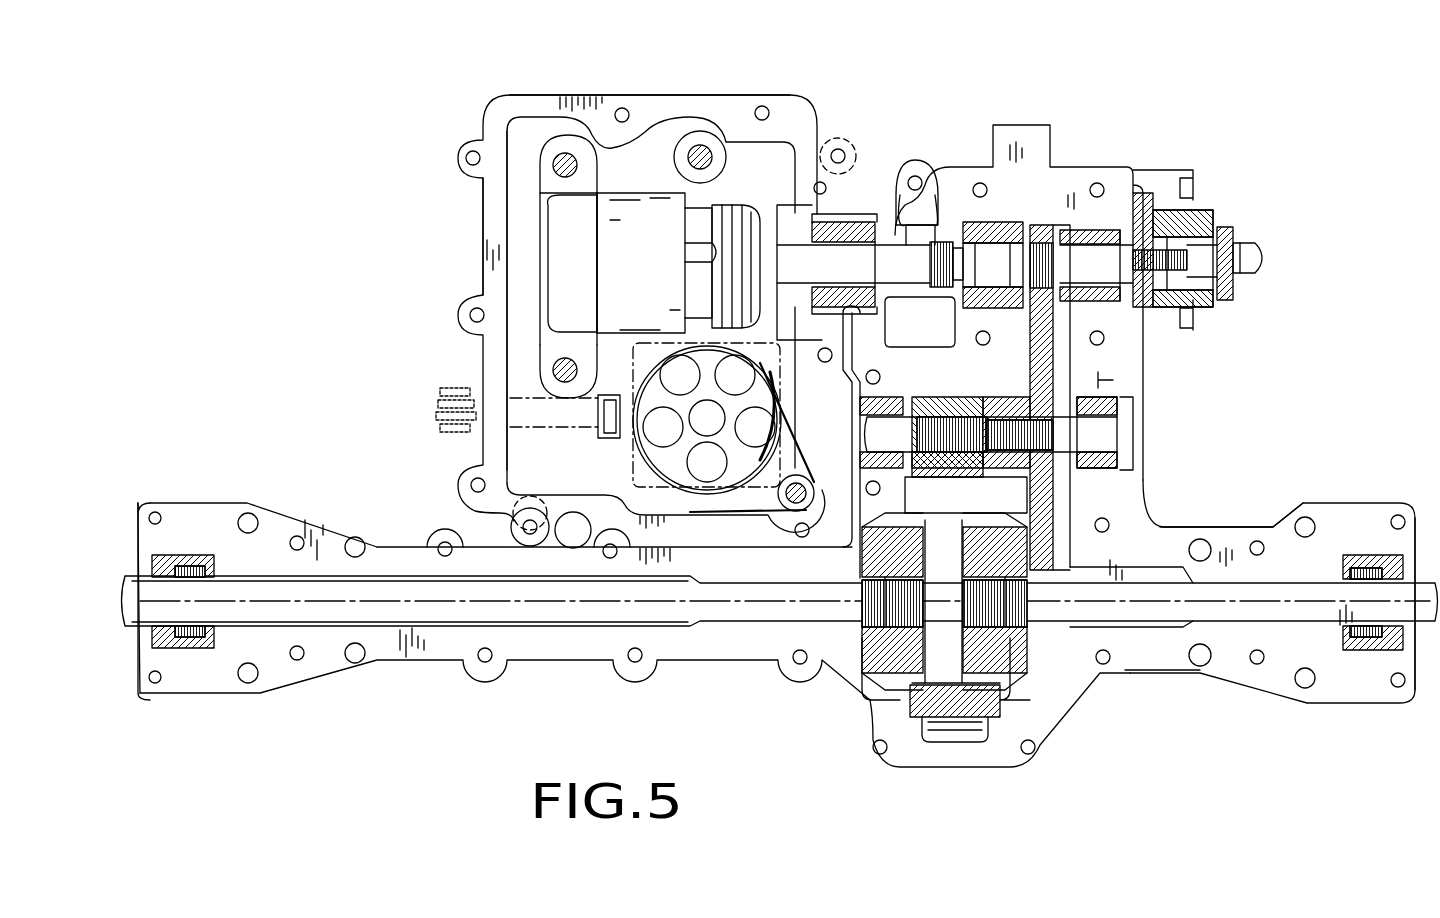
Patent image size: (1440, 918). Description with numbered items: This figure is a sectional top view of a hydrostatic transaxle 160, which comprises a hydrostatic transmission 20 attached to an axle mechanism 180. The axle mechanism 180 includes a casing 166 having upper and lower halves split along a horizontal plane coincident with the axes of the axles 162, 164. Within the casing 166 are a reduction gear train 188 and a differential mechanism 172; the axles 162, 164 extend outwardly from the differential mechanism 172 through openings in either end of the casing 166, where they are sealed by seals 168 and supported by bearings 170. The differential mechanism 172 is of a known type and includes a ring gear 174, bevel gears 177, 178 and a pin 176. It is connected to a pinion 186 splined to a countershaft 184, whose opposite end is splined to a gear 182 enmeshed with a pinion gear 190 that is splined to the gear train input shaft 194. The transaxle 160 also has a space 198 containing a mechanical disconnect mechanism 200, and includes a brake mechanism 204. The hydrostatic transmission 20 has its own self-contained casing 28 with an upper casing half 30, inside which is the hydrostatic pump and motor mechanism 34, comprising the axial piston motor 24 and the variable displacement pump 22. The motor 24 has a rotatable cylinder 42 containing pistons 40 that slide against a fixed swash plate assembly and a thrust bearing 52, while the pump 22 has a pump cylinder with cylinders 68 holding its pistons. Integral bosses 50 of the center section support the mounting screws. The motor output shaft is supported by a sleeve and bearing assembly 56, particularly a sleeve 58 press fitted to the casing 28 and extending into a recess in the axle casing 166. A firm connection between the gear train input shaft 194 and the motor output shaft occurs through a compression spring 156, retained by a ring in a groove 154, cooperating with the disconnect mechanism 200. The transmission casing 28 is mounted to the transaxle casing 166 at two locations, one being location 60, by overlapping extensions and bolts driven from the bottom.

The hydrostatic transmission 20 is at (486, 96).
The variable displacement pump 22 is at (688, 508).
The axial piston motor 24 is at (620, 277).
The casing 28 is at (628, 93).
The upper casing half 30 is at (487, 243).
The hydrostatic pump and motor mechanism 34 is at (628, 176).
The pistons 40 is at (712, 205).
The rotatable cylinder 42 is at (660, 178).
The integral bosses 50 is at (538, 165).
The thrust bearing 52 is at (703, 210).
The sleeve and bearing assembly 56 is at (812, 207).
The sleeve 58 is at (830, 226).
The mounting location 60 is at (839, 148).
The cylinders 68 is at (652, 432).
The groove 154 is at (880, 264).
The compression spring 156 is at (893, 225).
The transaxle 160 is at (415, 690).
The axle 162 is at (138, 660).
The axle 164 is at (1420, 668).
The casing 166 is at (1133, 443).
The seals 168 is at (173, 557).
The bearings 170 is at (205, 560).
The differential mechanism 172 is at (893, 690).
The ring gear 174 is at (948, 735).
The pin 176 is at (985, 700).
The bevel gear 177 is at (1003, 675).
The bevel gear 178 is at (870, 645).
The axle mechanism 180 is at (1075, 135).
The gear 182 is at (1043, 553).
The countershaft 184 is at (1105, 425).
The pinion 186 is at (967, 470).
The reduction gear train 188 is at (1113, 380).
The pinion gear 190 is at (1048, 306).
The gear train input shaft 194 is at (997, 250).
The space 198 is at (915, 175).
The mechanical disconnect mechanism 200 is at (932, 158).
The brake mechanism 204 is at (1212, 226).